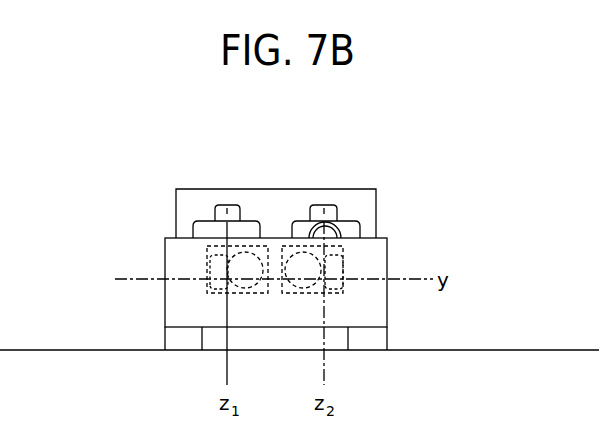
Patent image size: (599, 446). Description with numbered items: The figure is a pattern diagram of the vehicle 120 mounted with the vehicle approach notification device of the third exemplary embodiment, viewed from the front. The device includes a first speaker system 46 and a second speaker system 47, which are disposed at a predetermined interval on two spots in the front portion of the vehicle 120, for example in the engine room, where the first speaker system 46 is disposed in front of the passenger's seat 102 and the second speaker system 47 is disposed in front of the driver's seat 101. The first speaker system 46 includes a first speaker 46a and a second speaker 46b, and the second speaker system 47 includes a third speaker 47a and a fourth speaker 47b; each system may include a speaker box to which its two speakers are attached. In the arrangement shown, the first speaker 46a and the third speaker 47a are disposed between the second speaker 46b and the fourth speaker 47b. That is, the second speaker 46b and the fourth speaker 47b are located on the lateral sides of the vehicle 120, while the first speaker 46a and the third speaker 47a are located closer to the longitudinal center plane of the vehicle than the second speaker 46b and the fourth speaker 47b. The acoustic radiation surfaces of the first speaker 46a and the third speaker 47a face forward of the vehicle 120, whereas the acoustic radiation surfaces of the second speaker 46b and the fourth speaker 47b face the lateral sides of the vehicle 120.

The passenger's seat 102 is at (205, 223).
The driver's seat 101 is at (349, 221).
The vehicle 120 is at (333, 189).
The first speaker system 46 is at (207, 289).
The first speaker 46a is at (248, 258).
The second speaker 46b is at (217, 268).
The second speaker system 47 is at (343, 289).
The third speaker 47a is at (302, 258).
The fourth speaker 47b is at (335, 268).